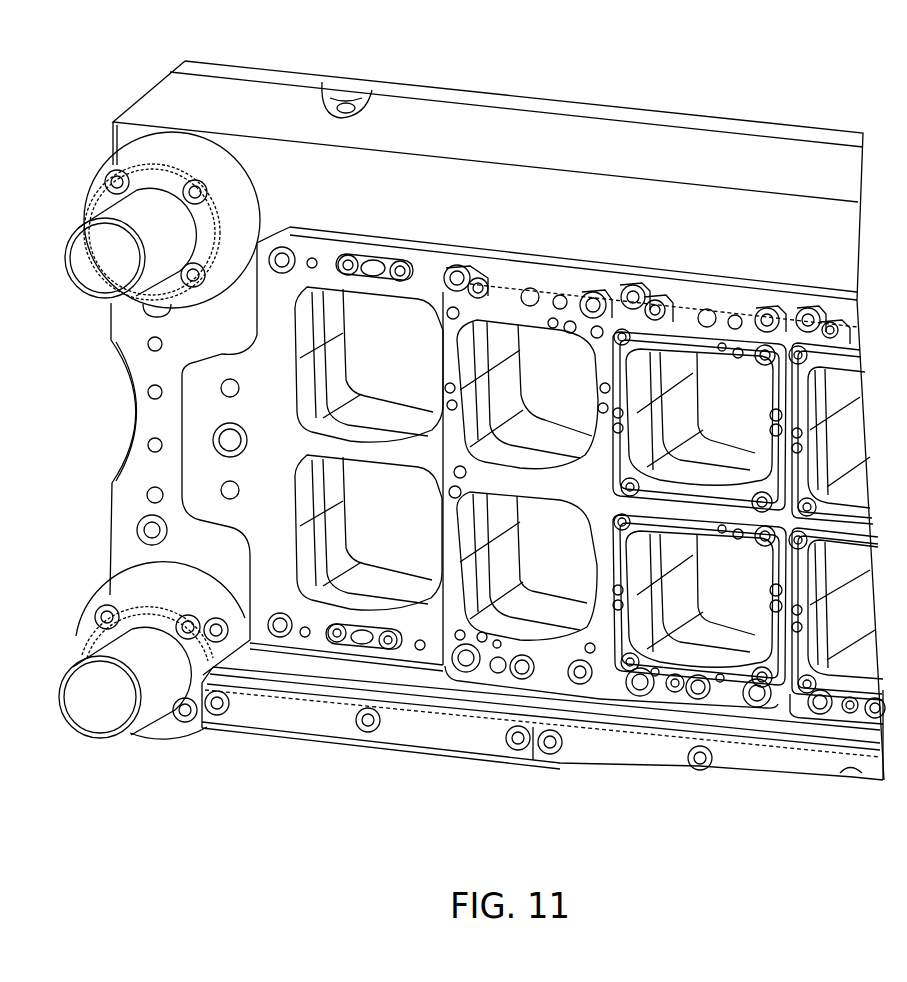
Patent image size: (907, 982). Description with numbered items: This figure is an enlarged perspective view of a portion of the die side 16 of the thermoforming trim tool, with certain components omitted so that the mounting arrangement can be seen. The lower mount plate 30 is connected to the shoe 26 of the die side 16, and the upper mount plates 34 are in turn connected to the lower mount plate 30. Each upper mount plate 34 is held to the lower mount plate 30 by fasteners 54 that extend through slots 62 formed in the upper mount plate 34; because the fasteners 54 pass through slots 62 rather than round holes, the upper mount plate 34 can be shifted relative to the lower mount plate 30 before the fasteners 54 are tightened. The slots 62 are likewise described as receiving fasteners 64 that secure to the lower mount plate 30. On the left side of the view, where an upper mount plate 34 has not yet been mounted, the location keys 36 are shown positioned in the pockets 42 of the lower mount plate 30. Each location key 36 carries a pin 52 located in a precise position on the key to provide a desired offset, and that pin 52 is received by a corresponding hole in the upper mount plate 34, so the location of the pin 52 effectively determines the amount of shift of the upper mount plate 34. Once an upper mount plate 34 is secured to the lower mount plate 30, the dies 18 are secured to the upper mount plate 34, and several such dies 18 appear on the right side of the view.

The die side 16 is at (620, 80).
The dies 18 is at (757, 388).
The shoe 26 is at (419, 182).
The lower mount plate 30 is at (200, 388).
The upper mount plate 34 is at (548, 668).
The location key 36 is at (368, 278).
The pockets 42 is at (378, 262).
The pin 52 is at (406, 265).
The fasteners 54 is at (351, 260).
The slots 62 is at (657, 318).
The fasteners 64 is at (686, 306).